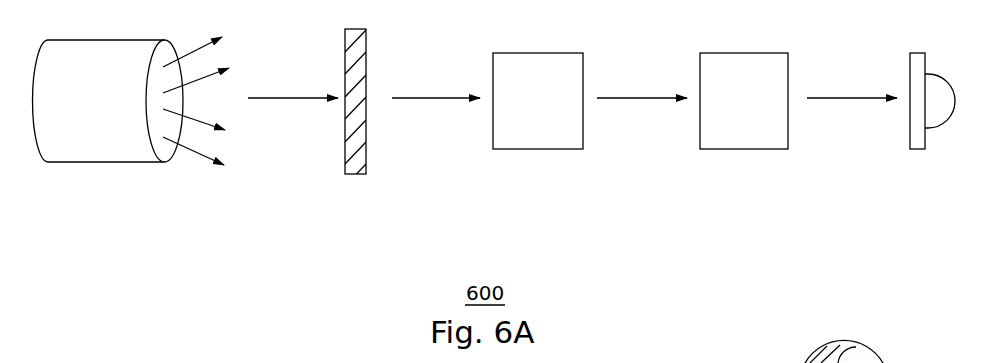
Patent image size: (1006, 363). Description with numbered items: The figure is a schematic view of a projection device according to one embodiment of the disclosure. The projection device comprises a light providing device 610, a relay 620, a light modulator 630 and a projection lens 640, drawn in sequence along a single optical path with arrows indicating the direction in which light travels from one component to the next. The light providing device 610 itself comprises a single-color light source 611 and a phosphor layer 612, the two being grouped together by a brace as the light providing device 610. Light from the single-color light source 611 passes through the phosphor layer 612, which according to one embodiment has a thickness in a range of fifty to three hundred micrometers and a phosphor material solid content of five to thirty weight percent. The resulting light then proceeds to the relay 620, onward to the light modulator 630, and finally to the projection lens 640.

The light providing device 610 is at (378, 263).
The single-color light source 611 is at (102, 145).
The phosphor layer 612 is at (362, 147).
The relay 620 is at (538, 150).
The light modulator 630 is at (743, 150).
The projection lens 640 is at (920, 150).